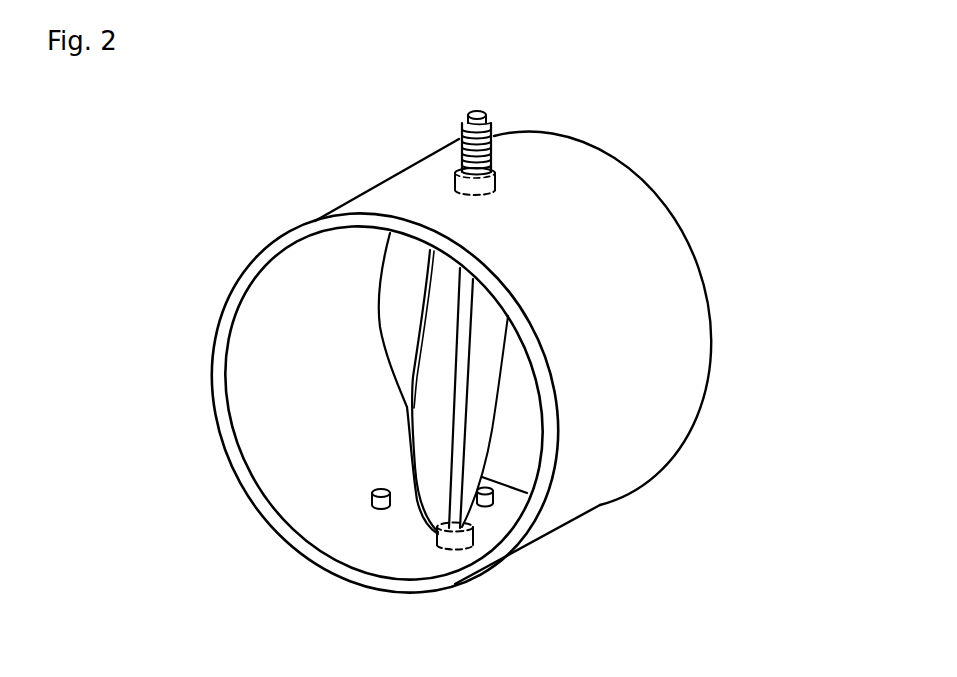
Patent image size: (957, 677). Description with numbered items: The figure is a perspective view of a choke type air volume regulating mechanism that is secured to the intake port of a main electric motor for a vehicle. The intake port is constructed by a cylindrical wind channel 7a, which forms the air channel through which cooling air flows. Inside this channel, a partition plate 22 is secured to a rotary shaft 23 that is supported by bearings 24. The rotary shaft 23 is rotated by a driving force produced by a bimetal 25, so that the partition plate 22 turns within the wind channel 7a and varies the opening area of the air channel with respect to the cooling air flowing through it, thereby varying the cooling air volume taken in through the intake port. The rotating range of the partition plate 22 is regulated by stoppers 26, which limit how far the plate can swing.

The cylindrical wind channel 7a is at (670, 250).
The partition plate 22 is at (420, 433).
The rotary shaft 23 is at (467, 420).
The bearings 24 is at (458, 174).
The bimetal 25 is at (488, 119).
The stoppers 26 is at (377, 505).